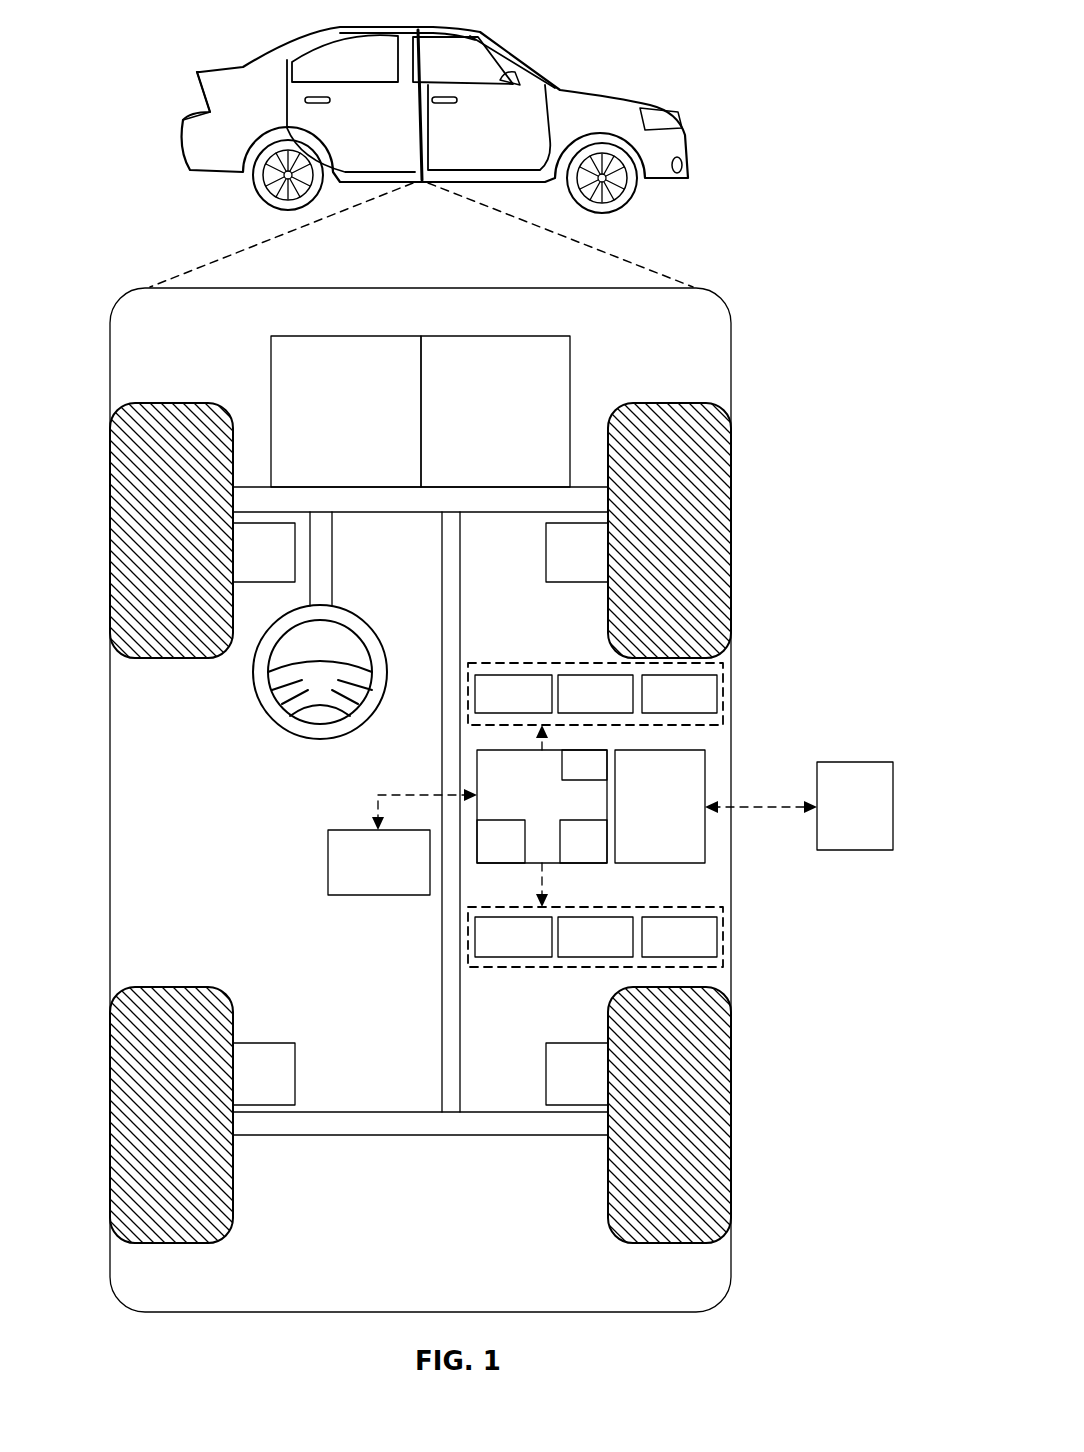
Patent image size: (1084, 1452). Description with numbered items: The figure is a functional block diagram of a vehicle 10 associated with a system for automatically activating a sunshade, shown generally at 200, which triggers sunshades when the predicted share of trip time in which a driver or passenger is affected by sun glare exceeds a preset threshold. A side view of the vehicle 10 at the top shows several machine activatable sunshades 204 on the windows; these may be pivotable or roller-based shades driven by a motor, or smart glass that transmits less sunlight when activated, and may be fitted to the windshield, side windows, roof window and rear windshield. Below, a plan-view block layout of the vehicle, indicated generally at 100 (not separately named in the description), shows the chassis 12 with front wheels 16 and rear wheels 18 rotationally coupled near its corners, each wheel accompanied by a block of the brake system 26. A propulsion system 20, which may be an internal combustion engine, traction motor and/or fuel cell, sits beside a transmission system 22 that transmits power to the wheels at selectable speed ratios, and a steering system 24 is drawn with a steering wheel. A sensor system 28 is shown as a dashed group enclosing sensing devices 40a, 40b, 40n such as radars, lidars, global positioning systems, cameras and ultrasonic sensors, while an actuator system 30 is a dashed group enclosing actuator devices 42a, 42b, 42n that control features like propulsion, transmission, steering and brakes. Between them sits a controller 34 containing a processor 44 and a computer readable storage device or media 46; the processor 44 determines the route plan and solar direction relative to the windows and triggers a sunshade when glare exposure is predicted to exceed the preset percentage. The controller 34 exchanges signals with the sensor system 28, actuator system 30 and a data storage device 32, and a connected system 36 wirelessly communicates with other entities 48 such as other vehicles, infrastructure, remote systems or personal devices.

The vehicle 10 is at (188, 108).
The chassis 12 is at (442, 968).
The front wheels 16 is at (172, 403).
The rear wheels 18 is at (170, 1243).
The propulsion system 20 is at (331, 425).
The transmission system 22 is at (481, 425).
The steering system 24 is at (344, 580).
The brake system 26 is at (250, 567).
The sensor system 28 is at (557, 663).
The actuator system 30 is at (560, 967).
The data storage device 32 is at (365, 876).
The controller 34 is at (526, 801).
The connected system 36 is at (646, 821).
The sensing device 40a is at (492, 708).
The sensing device 40b is at (575, 708).
The sensing device 40n is at (659, 708).
The actuator device 42a is at (492, 951).
The actuator device 42b is at (575, 951).
The actuator device 42n is at (659, 951).
The processor 44 is at (487, 856).
The computer readable storage device or media 46 is at (569, 856).
The other entities 48 is at (841, 820).
The vehicle system 100 is at (678, 263).
The system for automatically activating a sunshade 200 is at (566, 779).
The machine activatable sunshades 204 is at (277, 52).